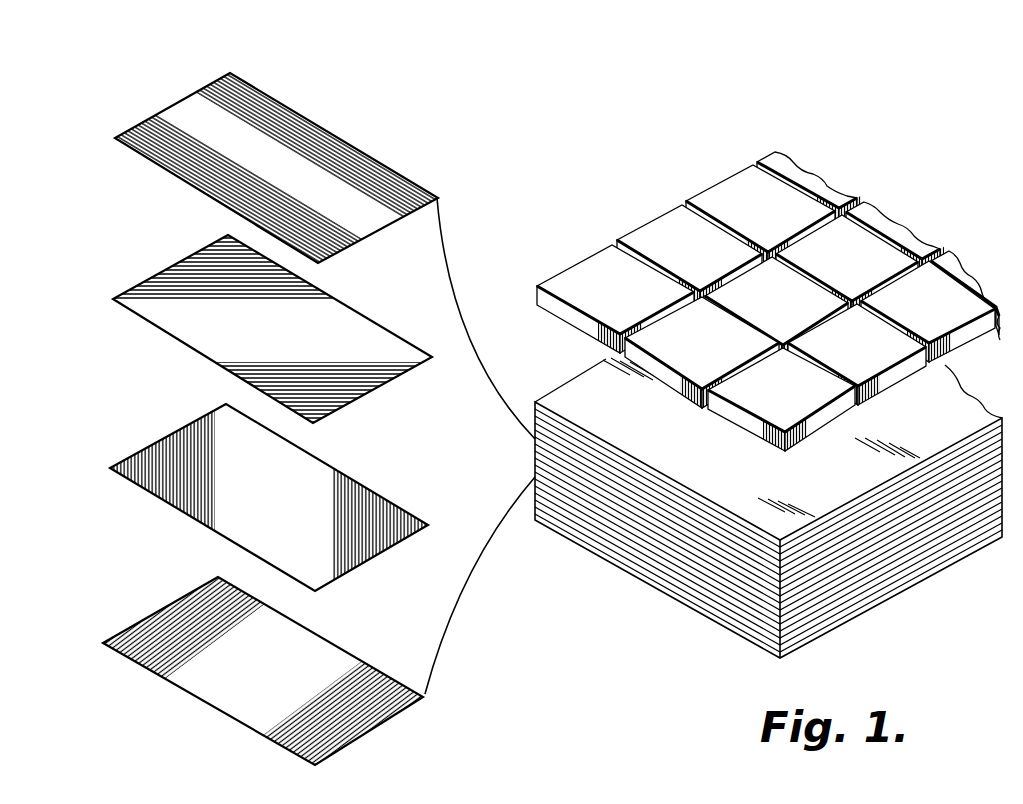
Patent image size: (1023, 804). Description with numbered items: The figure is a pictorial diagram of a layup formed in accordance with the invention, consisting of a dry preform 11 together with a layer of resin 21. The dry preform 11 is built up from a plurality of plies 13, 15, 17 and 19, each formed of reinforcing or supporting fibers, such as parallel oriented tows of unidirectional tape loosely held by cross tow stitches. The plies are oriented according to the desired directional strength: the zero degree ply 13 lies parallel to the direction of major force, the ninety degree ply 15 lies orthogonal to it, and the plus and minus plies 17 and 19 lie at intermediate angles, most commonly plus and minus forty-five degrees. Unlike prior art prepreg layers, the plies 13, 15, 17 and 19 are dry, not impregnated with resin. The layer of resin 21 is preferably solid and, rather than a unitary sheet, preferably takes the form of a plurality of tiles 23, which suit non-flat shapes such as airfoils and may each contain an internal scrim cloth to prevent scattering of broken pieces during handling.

The dry preform 11 is at (684, 609).
The ply 13 is at (371, 731).
The ply 15 is at (161, 112).
The ply 17 is at (378, 556).
The ply 19 is at (405, 370).
The layer of resin 21 is at (768, 288).
The tiles 23 is at (573, 275).